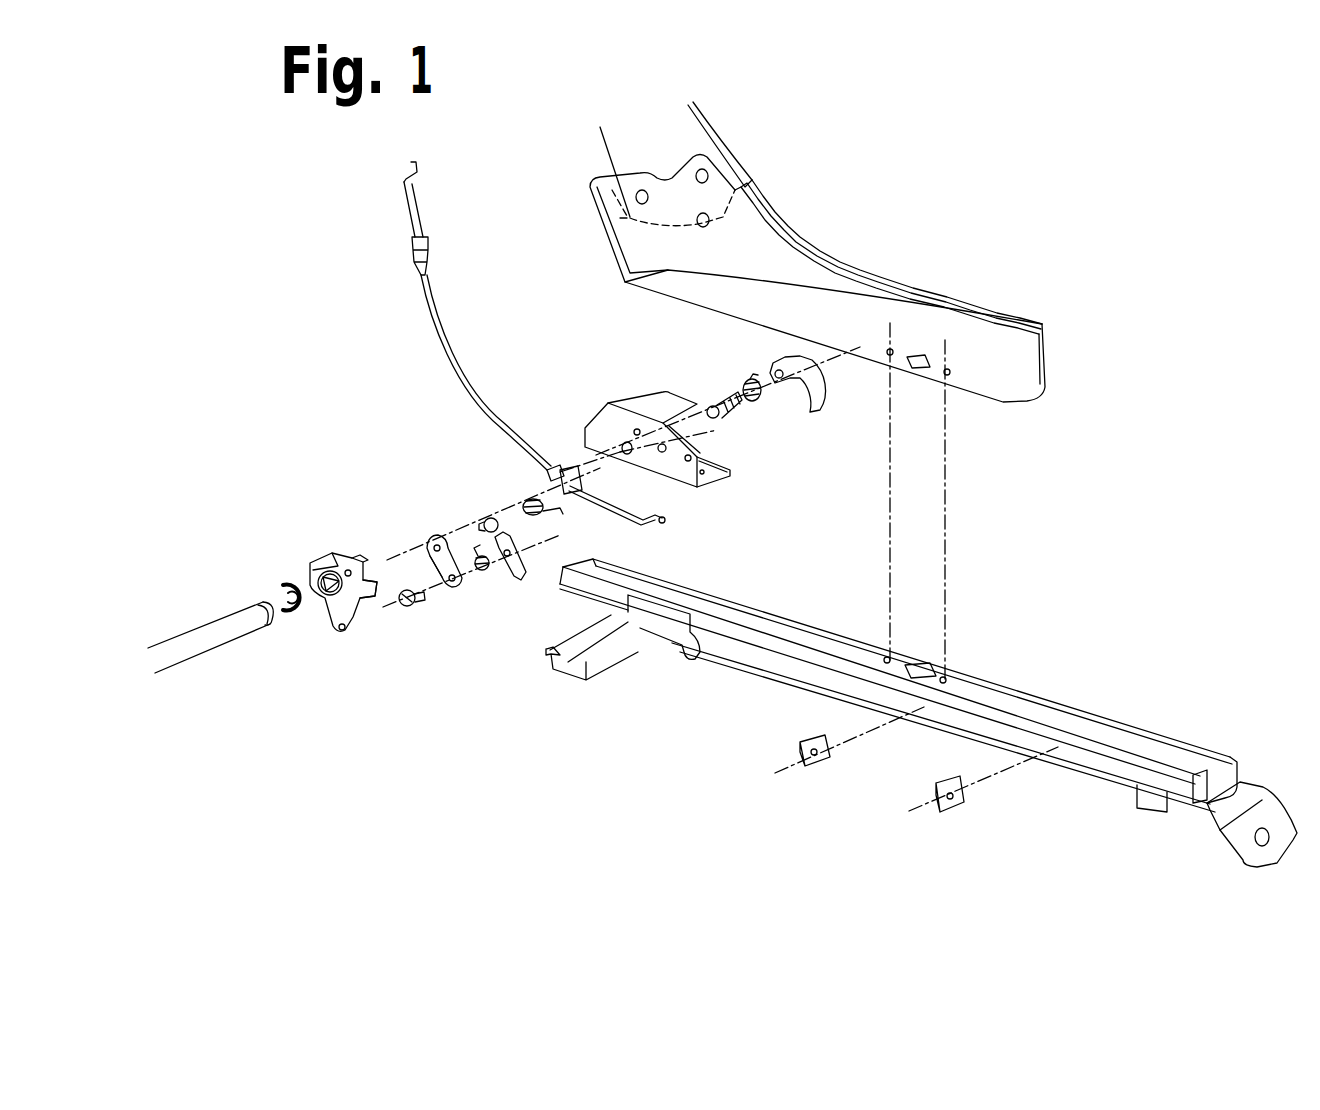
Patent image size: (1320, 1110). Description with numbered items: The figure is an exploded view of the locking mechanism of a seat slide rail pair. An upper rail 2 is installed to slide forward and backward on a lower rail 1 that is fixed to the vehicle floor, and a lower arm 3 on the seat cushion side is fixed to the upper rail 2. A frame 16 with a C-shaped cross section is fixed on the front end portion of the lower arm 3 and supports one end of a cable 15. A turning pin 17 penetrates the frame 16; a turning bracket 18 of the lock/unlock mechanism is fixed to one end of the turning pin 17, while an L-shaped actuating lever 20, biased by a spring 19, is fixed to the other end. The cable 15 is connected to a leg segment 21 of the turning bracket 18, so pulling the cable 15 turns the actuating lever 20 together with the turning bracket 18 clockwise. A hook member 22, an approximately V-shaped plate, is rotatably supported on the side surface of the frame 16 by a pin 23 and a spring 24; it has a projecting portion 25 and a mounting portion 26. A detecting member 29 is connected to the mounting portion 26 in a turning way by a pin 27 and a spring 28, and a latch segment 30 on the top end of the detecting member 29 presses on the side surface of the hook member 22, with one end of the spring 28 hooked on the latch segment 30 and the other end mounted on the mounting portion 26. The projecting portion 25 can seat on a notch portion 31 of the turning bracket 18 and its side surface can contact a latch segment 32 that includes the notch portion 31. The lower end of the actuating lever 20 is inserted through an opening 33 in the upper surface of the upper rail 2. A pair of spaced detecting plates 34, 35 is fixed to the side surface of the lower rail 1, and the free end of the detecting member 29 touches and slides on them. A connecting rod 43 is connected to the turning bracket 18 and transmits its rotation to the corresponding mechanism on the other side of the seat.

The lower rail 1 is at (740, 678).
The upper rail 2 is at (898, 664).
The lower arm 3 is at (800, 236).
The cable 15 is at (467, 390).
The frame 16 is at (632, 403).
The turning pin 17 is at (706, 399).
The turning bracket 18 is at (318, 552).
The spring 19 is at (757, 404).
The actuating lever 20 is at (791, 390).
The leg segment 21 is at (330, 634).
The hook member 22 is at (430, 550).
The pin 23 is at (480, 517).
The spring 24 is at (523, 502).
The projecting portion 25 is at (434, 585).
The mounting portion 26 is at (458, 586).
The pin 27 is at (408, 610).
The spring 28 is at (482, 571).
The detecting member 29 is at (514, 582).
The latch segment 30 is at (560, 535).
The notch portion 31 is at (365, 550).
The latch segment 32 is at (375, 610).
The opening 33 is at (950, 662).
The detecting plate 34 is at (951, 813).
The detecting plate 35 is at (807, 776).
The connecting rod 43 is at (237, 607).